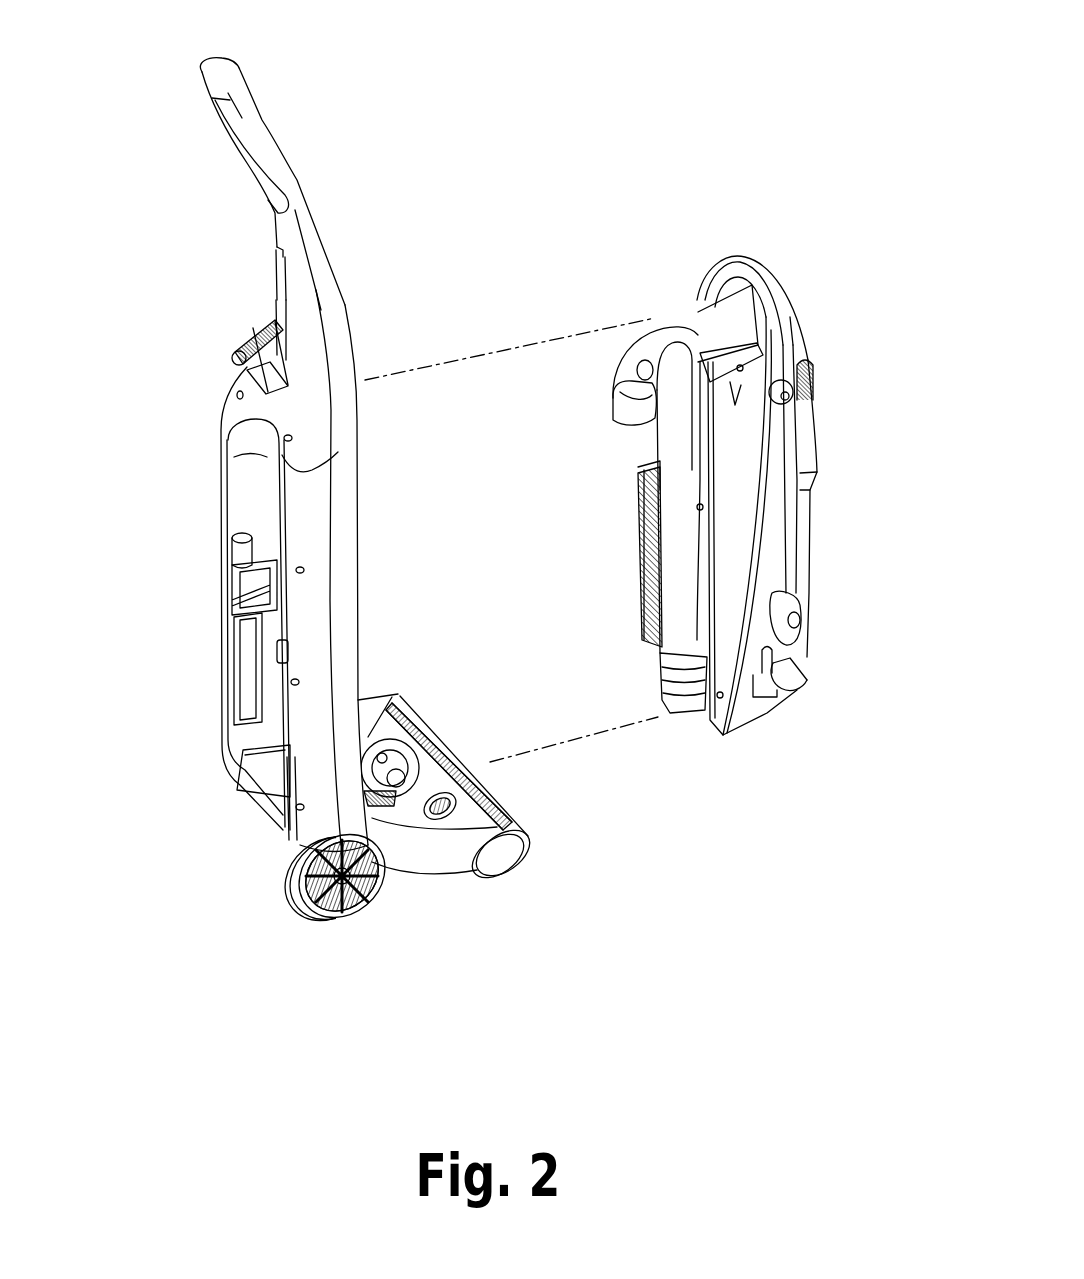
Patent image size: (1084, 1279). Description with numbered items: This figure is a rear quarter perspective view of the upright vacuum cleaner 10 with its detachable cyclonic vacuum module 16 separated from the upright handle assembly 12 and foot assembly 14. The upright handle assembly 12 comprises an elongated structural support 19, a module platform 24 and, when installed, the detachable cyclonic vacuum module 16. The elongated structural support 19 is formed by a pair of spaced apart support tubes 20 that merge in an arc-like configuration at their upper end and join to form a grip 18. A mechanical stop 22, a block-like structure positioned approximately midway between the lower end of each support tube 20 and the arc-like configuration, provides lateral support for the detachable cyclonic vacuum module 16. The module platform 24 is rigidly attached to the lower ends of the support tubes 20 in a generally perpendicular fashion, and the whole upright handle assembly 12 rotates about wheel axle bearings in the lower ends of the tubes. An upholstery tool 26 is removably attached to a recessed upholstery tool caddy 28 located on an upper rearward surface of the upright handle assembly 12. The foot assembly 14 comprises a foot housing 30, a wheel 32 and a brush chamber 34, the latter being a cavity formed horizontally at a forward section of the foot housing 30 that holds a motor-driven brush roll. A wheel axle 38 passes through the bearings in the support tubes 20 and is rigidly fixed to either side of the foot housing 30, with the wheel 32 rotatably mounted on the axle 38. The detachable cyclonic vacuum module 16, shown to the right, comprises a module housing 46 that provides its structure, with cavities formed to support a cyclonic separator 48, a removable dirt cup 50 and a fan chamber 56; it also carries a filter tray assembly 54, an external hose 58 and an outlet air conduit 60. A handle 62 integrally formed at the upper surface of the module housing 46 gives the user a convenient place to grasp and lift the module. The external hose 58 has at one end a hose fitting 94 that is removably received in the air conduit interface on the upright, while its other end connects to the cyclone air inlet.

The upright vacuum cleaner 10 is at (560, 53).
The upright handle assembly 12 is at (318, 220).
The foot assembly 14 is at (413, 890).
The detachable cyclonic vacuum module 16 is at (688, 308).
The grip 18 is at (240, 137).
The elongated structural support 19 is at (374, 364).
The support tubes 20 is at (238, 498).
The mechanical stop 22 is at (225, 607).
The module platform 24 is at (392, 745).
The upholstery tool 26 is at (240, 335).
The upholstery tool caddy 28 is at (236, 393).
The foot housing 30 is at (445, 752).
The wheel 32 is at (313, 915).
The brush chamber 34 is at (513, 858).
The wheel axle 38 is at (297, 898).
The module housing 46 is at (690, 319).
The cyclonic separator 48 is at (807, 433).
The removable dirt cup 50 is at (805, 533).
The filter tray assembly 54 is at (808, 590).
The fan chamber 56 is at (800, 690).
The external hose 58 is at (670, 508).
The outlet air conduit 60 is at (694, 557).
The handle 62 is at (753, 272).
The hose fitting 94 is at (676, 712).